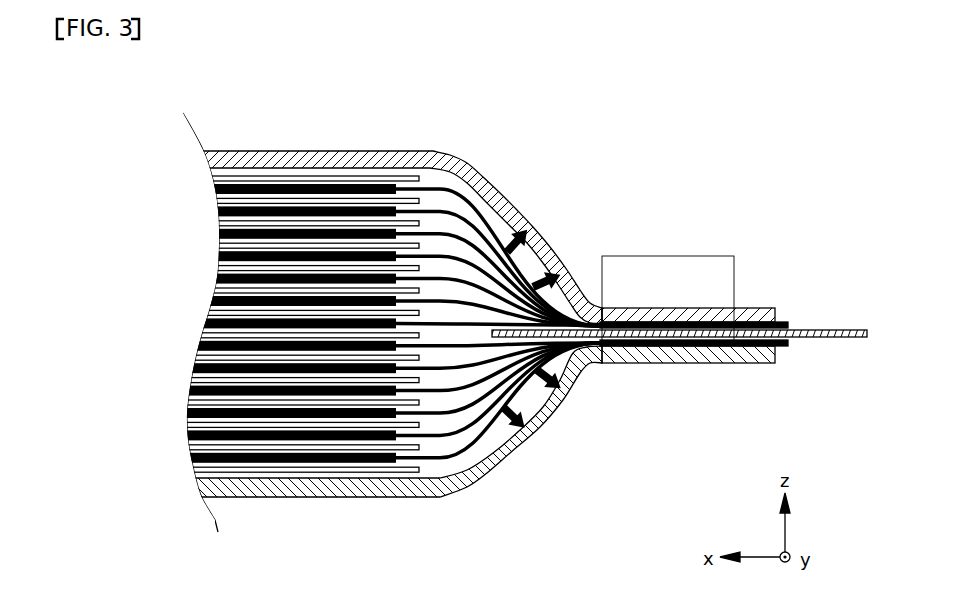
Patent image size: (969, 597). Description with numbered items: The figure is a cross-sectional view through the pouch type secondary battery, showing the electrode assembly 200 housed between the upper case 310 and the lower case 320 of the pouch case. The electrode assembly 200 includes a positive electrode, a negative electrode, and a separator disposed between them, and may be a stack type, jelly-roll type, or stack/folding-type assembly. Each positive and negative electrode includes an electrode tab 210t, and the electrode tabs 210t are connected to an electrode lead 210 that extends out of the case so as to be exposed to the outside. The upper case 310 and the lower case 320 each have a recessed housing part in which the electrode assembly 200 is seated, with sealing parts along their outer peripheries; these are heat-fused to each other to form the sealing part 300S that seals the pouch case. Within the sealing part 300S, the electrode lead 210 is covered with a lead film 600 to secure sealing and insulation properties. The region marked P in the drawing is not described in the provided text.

The upper case 310 is at (276, 165).
The lower case 320 is at (322, 488).
The electrode assembly 200 is at (358, 178).
The electrode tab 210t is at (448, 172).
The electrode lead 210 is at (830, 337).
The lead film 600 is at (784, 322).
The sealing part 300S is at (765, 302).
The pressing region P is at (668, 256).